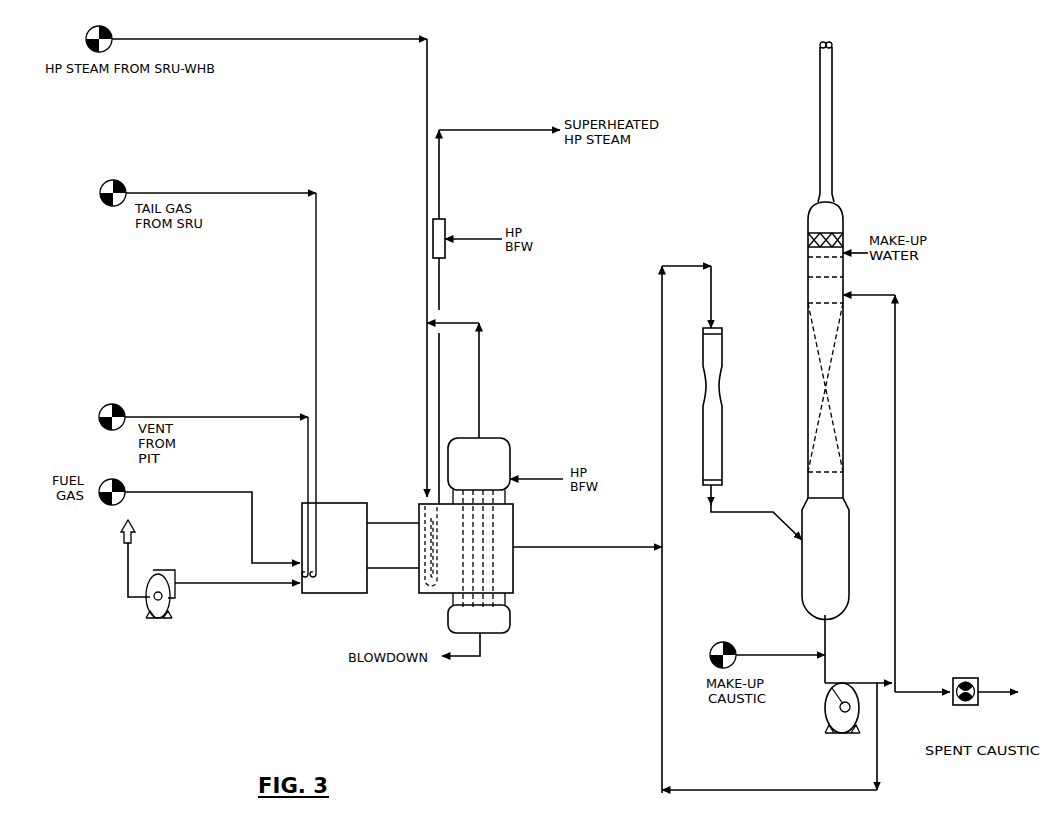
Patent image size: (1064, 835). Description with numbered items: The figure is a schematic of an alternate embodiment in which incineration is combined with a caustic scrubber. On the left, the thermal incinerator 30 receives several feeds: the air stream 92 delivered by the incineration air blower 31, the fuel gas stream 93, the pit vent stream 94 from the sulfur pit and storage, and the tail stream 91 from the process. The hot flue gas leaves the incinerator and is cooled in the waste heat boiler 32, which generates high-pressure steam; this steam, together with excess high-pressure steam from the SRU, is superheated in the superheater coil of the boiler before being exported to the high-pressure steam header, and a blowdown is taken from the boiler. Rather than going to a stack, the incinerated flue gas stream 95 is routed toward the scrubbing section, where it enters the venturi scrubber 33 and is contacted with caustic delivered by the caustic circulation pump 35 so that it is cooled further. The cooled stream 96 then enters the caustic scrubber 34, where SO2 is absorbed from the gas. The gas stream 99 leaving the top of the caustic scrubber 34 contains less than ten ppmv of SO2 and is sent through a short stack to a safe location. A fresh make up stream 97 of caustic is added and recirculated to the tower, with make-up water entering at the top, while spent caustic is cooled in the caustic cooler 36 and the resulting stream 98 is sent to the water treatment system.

The thermal incinerator 30 is at (355, 497).
The incineration air blower 31 is at (161, 562).
The waste heat boiler 32 is at (531, 507).
The venturi scrubber 33 is at (686, 396).
The caustic scrubber 34 is at (848, 352).
The caustic circulation pump 35 is at (822, 705).
The caustic cooler 36 is at (957, 676).
The tail stream 91 is at (190, 192).
The air stream 92 is at (211, 582).
The fuel gas stream 93 is at (170, 491).
The pit vent stream 94 is at (232, 416).
The incinerated flue gas stream 95 is at (584, 546).
The cooled stream 96 is at (743, 511).
The fresh make up stream 97 is at (766, 654).
The spent caustic stream 98 is at (1000, 691).
The gas stream 99 is at (826, 45).